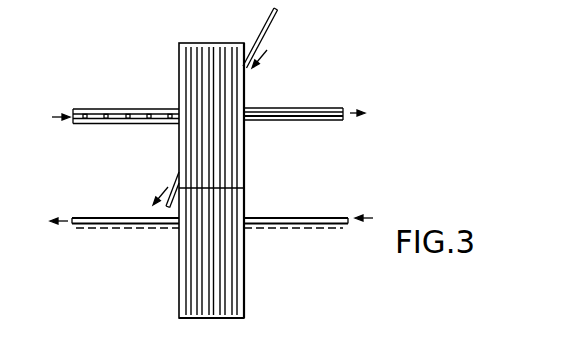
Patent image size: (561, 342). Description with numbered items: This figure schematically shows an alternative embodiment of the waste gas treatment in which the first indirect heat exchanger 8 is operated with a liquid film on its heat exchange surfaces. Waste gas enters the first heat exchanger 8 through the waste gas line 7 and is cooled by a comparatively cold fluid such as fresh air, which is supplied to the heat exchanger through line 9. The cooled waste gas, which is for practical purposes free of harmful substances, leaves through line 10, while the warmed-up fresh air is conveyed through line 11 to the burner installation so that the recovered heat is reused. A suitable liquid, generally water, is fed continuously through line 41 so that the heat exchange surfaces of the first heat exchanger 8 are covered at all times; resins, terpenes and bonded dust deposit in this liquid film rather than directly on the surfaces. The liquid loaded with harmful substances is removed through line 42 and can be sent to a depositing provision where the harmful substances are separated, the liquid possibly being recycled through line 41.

The waste gas line 7 is at (118, 108).
The first indirect heat exchanger 8 is at (255, 178).
The line 9 is at (302, 222).
The line 10 is at (316, 108).
The line 11 is at (120, 228).
The line 41 is at (271, 22).
The line 42 is at (163, 186).